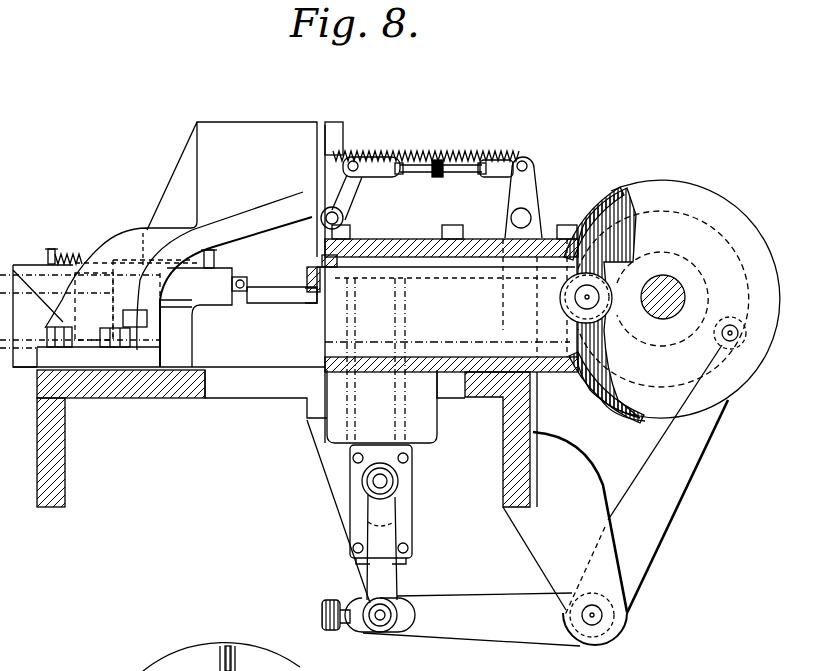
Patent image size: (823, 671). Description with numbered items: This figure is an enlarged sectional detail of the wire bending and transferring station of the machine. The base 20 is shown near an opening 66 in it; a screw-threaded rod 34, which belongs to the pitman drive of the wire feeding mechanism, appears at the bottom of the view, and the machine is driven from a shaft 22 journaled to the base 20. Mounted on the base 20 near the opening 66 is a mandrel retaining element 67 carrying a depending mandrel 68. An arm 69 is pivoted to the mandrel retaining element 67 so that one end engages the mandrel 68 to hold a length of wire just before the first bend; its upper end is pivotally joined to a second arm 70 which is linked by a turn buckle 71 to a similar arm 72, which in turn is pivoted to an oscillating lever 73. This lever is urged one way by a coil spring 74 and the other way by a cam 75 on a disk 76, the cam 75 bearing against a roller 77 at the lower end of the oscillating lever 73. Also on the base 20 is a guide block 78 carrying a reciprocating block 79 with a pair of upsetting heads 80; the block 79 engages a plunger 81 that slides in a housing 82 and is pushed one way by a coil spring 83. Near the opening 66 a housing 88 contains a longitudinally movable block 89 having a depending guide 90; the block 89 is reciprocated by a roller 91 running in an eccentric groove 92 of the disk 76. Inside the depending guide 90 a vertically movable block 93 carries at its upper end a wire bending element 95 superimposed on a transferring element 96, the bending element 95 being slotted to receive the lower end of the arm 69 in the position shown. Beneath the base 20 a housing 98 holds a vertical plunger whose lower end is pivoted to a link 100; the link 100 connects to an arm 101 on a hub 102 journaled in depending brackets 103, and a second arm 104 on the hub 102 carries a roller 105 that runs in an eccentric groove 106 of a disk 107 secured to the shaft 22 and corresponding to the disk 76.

The base 20 is at (130, 388).
The shaft 22 is at (673, 283).
The screw-threaded rod 34 is at (245, 645).
The opening 66 is at (230, 388).
The mandrel retaining element 67 is at (210, 148).
The mandrel 68 is at (290, 290).
The arm 69 is at (352, 199).
The second arm 70 is at (377, 167).
The turn buckle 71 is at (457, 157).
The arm 72 is at (498, 155).
The oscillating lever 73 is at (530, 188).
The coil spring 74 is at (422, 153).
The cam 75 is at (616, 423).
The disk 76 is at (592, 210).
The roller 77 is at (485, 386).
The guide block 78 is at (216, 300).
The reciprocating block 79 is at (240, 273).
The upsetting heads 80 is at (250, 283).
The plunger 81 is at (95, 283).
The housing 82 is at (28, 270).
The coil spring 83 is at (80, 255).
The housing 88 is at (410, 237).
The longitudinally movable block 89 is at (337, 328).
The depending guide 90 is at (335, 430).
The roller 91 is at (627, 253).
The eccentric groove 92 is at (620, 187).
The vertically movable block 93 is at (385, 323).
The wire bending element 95 is at (315, 262).
The transferring element 96 is at (310, 285).
The housing 98 is at (353, 508).
The link 100 is at (410, 547).
The arm 101 is at (510, 630).
The hub 102 is at (628, 619).
The depending brackets 103 is at (577, 543).
The second arm 104 is at (668, 488).
The roller 105 is at (738, 405).
The eccentric groove 106 is at (737, 257).
The disk 107 is at (662, 192).